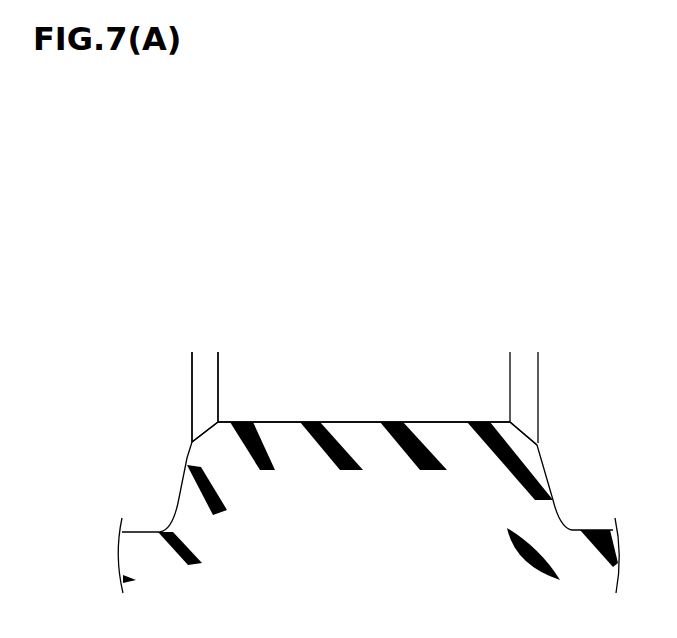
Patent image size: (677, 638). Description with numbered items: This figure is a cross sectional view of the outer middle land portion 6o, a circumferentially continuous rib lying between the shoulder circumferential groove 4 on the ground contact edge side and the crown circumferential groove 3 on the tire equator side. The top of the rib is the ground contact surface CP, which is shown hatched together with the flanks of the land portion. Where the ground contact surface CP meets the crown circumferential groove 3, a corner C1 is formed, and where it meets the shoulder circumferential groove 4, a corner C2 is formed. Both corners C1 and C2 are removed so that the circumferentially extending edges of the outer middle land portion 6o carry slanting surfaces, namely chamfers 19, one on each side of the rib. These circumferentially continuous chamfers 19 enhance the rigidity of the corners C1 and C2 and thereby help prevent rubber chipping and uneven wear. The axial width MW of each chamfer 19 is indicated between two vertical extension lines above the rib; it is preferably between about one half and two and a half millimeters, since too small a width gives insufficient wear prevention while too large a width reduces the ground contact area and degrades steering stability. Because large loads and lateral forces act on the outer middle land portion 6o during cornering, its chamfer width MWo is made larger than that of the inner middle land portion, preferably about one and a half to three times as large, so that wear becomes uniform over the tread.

The outer middle land portion 6o is at (390, 532).
The shoulder circumferential groove 4 is at (170, 503).
The crown circumferential groove 3 is at (640, 502).
The chamfer 19 is at (198, 428).
The corner C1 is at (548, 407).
The corner C2 is at (178, 405).
The ground contact surface CP is at (362, 420).
The axial width of the chamfers MW is at (253, 352).
The width of the chamfers of the outer middle land portion MWo is at (204, 367).